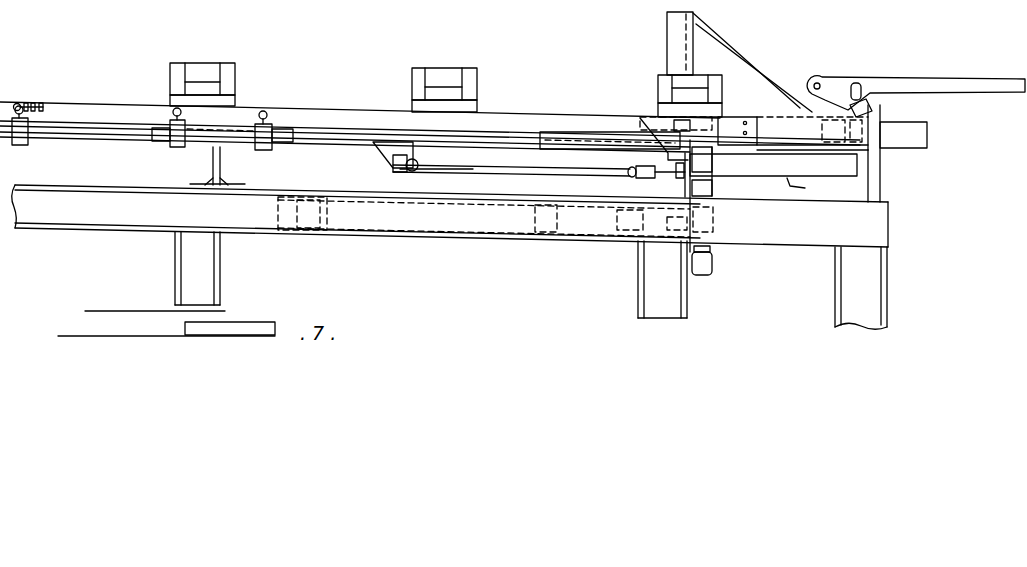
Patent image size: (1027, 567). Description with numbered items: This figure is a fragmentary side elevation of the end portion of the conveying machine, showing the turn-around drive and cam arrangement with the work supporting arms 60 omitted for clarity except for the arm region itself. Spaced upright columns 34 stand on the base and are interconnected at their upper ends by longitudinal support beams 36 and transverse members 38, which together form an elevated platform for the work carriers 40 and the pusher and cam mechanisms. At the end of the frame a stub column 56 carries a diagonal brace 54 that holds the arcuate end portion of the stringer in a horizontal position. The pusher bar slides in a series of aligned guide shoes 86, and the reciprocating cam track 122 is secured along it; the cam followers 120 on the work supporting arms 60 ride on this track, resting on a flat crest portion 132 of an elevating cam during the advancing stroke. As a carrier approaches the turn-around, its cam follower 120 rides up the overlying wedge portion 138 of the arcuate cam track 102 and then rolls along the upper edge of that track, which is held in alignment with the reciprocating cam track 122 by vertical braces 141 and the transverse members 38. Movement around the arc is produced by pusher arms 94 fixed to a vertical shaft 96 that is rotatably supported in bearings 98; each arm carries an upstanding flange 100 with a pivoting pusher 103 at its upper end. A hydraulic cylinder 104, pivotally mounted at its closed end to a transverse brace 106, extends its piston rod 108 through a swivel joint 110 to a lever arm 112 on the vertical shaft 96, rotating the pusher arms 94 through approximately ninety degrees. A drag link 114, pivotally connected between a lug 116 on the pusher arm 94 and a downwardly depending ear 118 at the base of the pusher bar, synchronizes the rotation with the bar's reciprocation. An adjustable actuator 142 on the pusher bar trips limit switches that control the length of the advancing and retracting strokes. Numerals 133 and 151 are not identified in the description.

The upright column 34 is at (200, 277).
The longitudinal support beam 36 is at (868, 224).
The transverse member 38 is at (222, 165).
The work carrier 40 is at (237, 68).
The diagonal brace 54 is at (722, 48).
The stub column 56 is at (686, 30).
The work supporting arm 60 is at (948, 82).
The guide shoe 86 is at (163, 140).
The pusher arm 94 is at (811, 190).
The vertical shaft 96 is at (712, 251).
The bearing 98 is at (714, 189).
The upstanding flange 100 is at (714, 163).
The arcuate cam track 102 is at (778, 125).
The pivoting pusher 103 is at (648, 113).
The hydraulic cylinder 104 is at (413, 218).
The transverse brace 106 is at (293, 246).
The piston rod 108 is at (563, 232).
The swivel joint 110 is at (620, 242).
The lever arm 112 is at (733, 227).
The drag link 114 is at (473, 167).
The lug 116 is at (667, 157).
The depending ear 118 is at (388, 153).
The cam follower 120 is at (868, 98).
The reciprocating cam track 122 is at (74, 104).
The flat crest portion 132 is at (20, 146).
The clamp 133 is at (177, 148).
The overlying wedge portion 138 is at (747, 104).
The vertical brace 141 is at (875, 189).
The adjustable actuator 142 is at (32, 103).
The clamp 151 is at (266, 130).